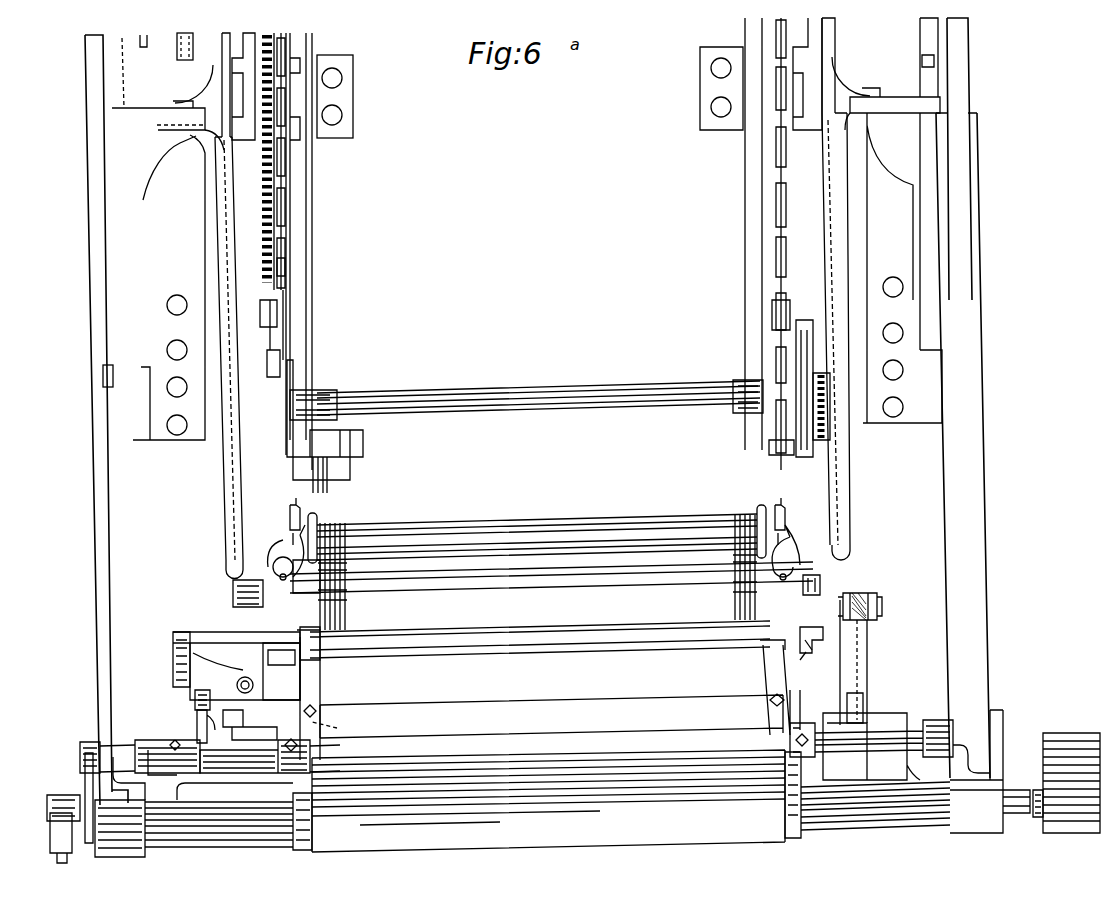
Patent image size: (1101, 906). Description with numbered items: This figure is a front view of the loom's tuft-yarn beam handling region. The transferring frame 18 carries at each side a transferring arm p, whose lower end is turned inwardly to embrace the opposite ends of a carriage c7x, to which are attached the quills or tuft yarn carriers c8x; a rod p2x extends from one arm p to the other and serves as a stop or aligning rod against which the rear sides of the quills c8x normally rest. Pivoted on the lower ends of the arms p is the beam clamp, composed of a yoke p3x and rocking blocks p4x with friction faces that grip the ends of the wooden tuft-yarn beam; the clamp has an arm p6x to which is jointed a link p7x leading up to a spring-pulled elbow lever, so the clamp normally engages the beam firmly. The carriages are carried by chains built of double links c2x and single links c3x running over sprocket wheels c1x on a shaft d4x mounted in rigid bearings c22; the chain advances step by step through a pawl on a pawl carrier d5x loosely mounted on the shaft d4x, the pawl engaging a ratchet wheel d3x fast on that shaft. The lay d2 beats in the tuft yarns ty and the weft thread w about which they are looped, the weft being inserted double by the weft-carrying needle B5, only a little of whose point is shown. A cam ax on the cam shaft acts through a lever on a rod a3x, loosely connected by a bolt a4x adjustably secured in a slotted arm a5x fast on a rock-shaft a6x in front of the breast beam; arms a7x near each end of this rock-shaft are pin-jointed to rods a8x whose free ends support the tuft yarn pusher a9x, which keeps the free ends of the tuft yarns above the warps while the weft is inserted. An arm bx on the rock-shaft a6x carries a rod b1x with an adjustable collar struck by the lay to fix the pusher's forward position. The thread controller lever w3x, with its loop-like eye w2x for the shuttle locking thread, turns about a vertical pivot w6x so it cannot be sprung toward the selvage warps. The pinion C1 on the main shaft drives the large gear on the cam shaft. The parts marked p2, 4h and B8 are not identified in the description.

The transferring frame 18 is at (117, 402).
The single links c3x is at (284, 190).
The double links c2x is at (288, 213).
The rigid bearings c22 is at (311, 272).
The sprocket wheels c1x is at (295, 370).
The shaft d4x is at (655, 392).
The pawl carrier d5x is at (815, 355).
The ratchet wheel d3x is at (806, 453).
The transferring arm p is at (231, 500).
The link p7x is at (842, 50).
The arm p6x is at (870, 555).
The rocking blocks p4x is at (290, 527).
The yoke p3x is at (859, 517).
The rod p2x is at (810, 592).
The hub p2 is at (868, 597).
The lay d2 is at (868, 652).
The weft-carrying needle B5 is at (810, 628).
The weft-thread w is at (812, 640).
The cam ax is at (506, 527).
The quills or tuft yarn carriers c8x is at (735, 598).
The tuft-yarns ty is at (733, 607).
The carriages c7x is at (577, 579).
The tuft yarn pusher a9x is at (590, 627).
The rods a8x is at (767, 648).
The arms a7x is at (337, 728).
The roller 4h is at (522, 803).
The rock-shaft a6x is at (90, 720).
The arm a5x is at (85, 780).
The bolt a4x is at (50, 798).
The rod a3x is at (55, 845).
The vertical pivot w6x is at (183, 632).
The lever w3x is at (240, 643).
The loop-like eye w2x is at (298, 626).
The rod b1x is at (195, 700).
The arm bx is at (196, 727).
The shaft B8 is at (1036, 791).
The pinion C1 is at (1050, 733).